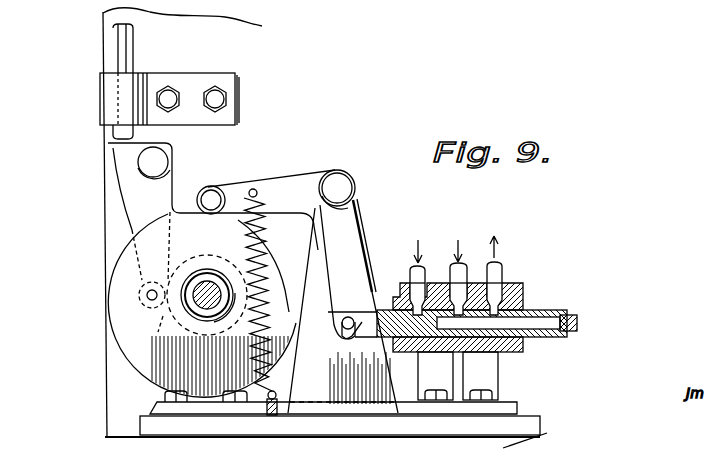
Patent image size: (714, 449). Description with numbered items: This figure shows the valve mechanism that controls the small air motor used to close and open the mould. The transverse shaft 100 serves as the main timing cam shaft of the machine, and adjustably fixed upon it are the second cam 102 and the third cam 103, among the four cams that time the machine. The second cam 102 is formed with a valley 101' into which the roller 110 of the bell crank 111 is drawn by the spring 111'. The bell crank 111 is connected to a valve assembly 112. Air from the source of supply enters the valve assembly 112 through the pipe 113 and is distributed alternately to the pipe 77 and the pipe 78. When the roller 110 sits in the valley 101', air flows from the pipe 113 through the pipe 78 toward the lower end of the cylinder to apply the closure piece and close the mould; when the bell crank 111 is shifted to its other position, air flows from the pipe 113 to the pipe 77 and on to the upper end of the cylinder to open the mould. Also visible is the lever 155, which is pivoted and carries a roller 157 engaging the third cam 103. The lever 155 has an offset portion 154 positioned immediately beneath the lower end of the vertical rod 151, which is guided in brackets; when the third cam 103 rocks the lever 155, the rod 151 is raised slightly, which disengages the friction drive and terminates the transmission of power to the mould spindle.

The vertical rod 151 is at (122, 50).
The offset portion 154 is at (112, 153).
The lever 155 is at (135, 207).
The roller 157 is at (138, 297).
The third cam 103 is at (164, 319).
The second cam 102 is at (140, 352).
The transverse shaft 100 is at (208, 285).
The valley 101' is at (270, 302).
The roller 110 is at (215, 189).
The bell crank 111 is at (292, 241).
The spring 111' is at (333, 337).
The valve assembly 112 is at (395, 293).
The pipe 77 is at (421, 268).
The pipe 113 is at (460, 265).
The pipe 78 is at (497, 272).